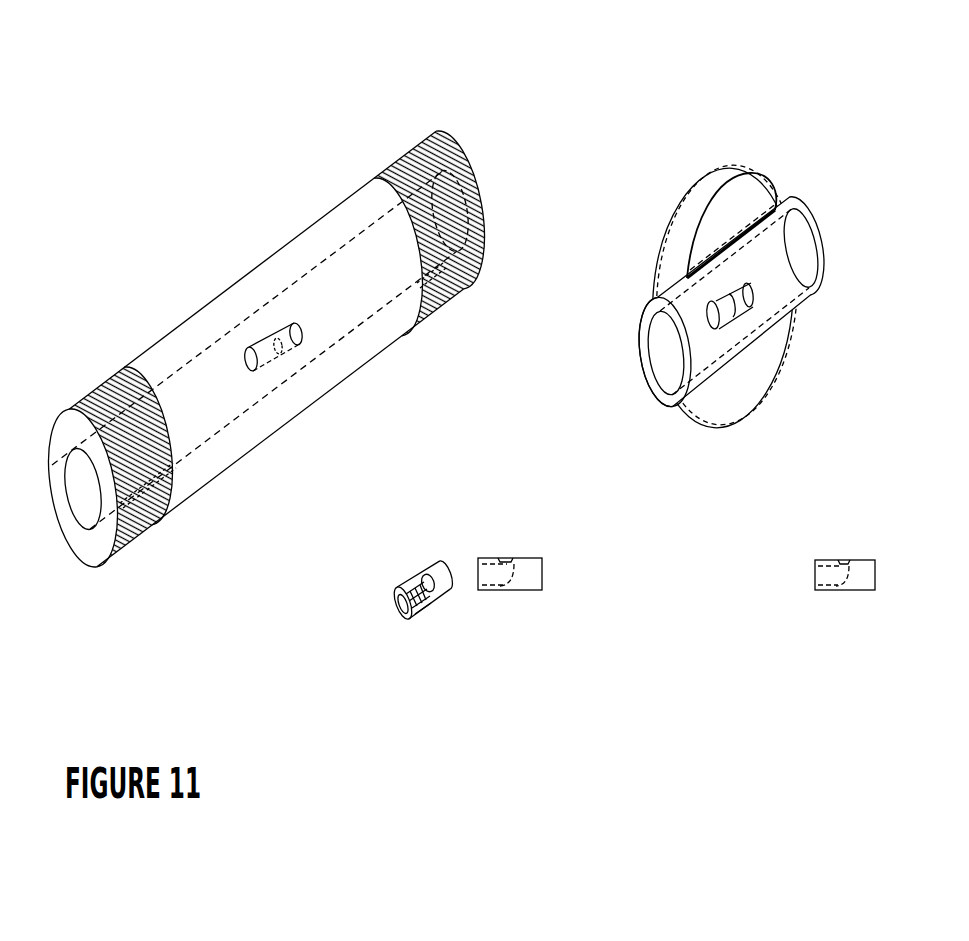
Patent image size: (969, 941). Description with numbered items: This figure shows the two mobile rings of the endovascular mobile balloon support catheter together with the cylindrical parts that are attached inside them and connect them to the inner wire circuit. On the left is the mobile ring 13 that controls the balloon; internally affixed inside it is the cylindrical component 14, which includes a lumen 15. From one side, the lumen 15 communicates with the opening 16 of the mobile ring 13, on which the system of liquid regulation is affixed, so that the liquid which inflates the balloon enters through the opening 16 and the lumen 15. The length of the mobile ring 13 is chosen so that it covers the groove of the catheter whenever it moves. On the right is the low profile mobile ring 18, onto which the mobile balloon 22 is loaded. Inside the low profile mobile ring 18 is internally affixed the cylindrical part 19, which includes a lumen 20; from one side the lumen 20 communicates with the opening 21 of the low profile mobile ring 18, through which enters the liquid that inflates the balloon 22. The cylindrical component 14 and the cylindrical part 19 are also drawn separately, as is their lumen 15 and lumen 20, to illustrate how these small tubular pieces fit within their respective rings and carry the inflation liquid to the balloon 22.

The mobile ring 13 is at (152, 363).
The cylindrical component 14 is at (256, 347).
The lumen 15 is at (252, 372).
The opening 16 is at (295, 323).
The low profile mobile ring 18 is at (797, 198).
The cylindrical part 19 is at (725, 332).
The lumen 20 is at (755, 300).
The opening 21 is at (747, 290).
The mobile balloon 22 is at (692, 215).